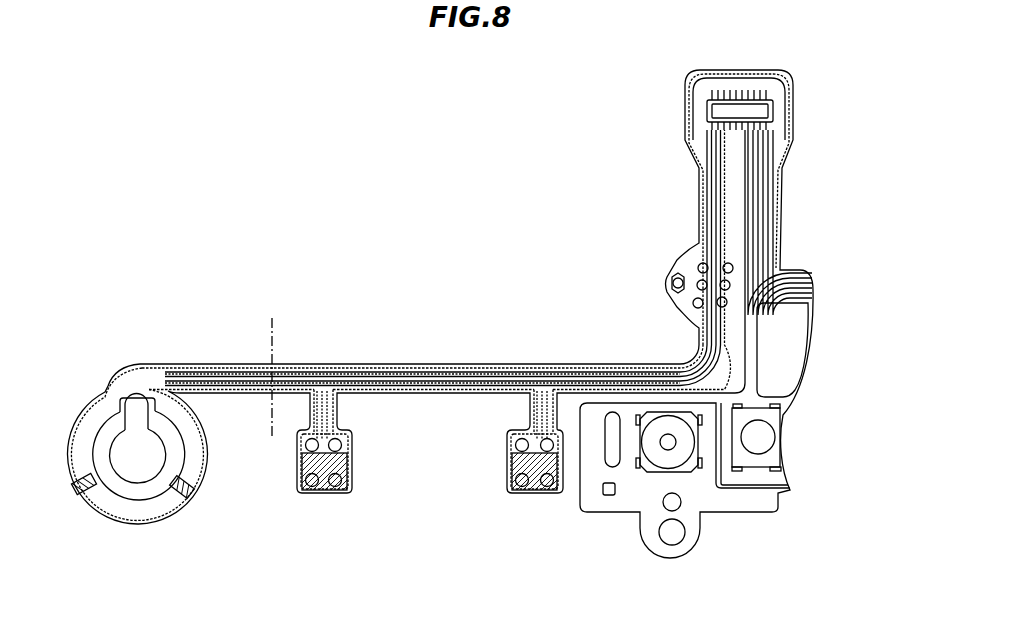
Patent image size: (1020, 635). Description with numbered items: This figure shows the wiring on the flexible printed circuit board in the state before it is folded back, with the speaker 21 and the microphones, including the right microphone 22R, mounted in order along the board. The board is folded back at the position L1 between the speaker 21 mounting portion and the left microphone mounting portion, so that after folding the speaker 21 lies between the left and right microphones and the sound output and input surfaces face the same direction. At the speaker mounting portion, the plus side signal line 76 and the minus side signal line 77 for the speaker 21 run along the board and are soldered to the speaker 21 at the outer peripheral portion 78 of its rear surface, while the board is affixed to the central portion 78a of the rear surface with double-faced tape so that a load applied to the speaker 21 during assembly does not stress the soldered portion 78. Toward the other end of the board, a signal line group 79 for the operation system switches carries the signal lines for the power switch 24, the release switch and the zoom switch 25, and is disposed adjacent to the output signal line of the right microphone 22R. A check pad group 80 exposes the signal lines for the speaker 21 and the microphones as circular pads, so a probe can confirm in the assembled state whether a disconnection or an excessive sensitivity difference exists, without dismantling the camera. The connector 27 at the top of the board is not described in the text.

The speaker 21 is at (140, 526).
The right microphone 22R is at (520, 455).
The power switch 24 is at (657, 456).
The zoom switch 25 is at (758, 447).
The connector 27 is at (708, 110).
The plus side signal line 76 is at (196, 378).
The minus side signal line 77 is at (157, 373).
The outer peripheral portion (soldered portion) 78 is at (185, 500).
The central portion 78a is at (157, 452).
The signal line group for operation system switches 79 is at (745, 197).
The check pad group 80 is at (660, 248).
The fold-back position L1 is at (270, 366).